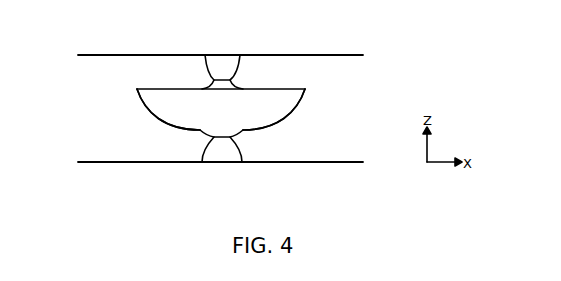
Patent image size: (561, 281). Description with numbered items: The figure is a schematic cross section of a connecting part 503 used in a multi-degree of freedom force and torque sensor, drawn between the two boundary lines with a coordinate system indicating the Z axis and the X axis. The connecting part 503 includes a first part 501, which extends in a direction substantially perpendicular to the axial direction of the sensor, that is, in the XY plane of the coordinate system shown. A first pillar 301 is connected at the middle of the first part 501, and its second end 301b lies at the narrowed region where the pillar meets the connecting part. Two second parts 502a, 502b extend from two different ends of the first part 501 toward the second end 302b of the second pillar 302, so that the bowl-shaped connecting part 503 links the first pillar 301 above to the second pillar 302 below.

The first pillar 301 is at (228, 72).
The second end of the first pillar 301b is at (212, 81).
The second pillar 302 is at (213, 143).
The second end of the second pillar 302b is at (233, 137).
The first part 501 is at (183, 88).
The second part 502a is at (147, 115).
The second part 502b is at (290, 118).
The connecting part 503 is at (143, 103).